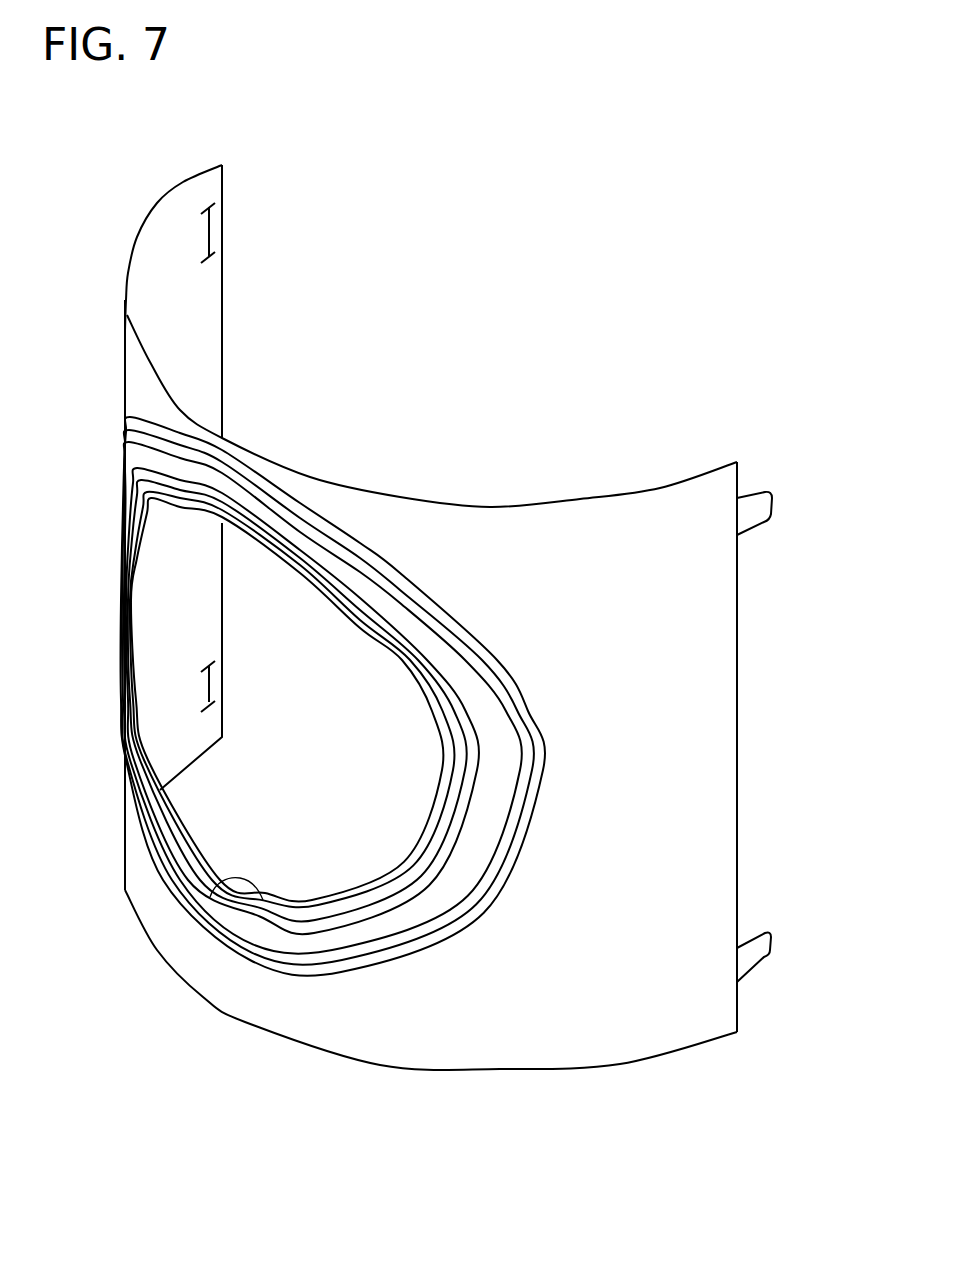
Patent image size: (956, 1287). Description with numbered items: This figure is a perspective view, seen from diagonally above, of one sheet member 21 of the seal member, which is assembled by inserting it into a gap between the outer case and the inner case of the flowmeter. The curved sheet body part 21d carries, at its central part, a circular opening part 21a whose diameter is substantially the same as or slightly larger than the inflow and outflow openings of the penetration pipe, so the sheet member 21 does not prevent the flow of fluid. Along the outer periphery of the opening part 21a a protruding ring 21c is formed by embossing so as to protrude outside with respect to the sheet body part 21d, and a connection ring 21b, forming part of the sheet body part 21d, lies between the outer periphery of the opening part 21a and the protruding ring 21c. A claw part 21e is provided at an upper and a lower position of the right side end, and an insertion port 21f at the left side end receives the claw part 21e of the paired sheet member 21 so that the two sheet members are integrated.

The sheet member 21 is at (472, 506).
The opening part 21a is at (204, 900).
The connection ring 21b is at (445, 743).
The protruding ring 21c is at (485, 823).
The sheet body part 21d is at (590, 543).
The claw part 21e is at (757, 508).
The insertion port 21f is at (208, 232).